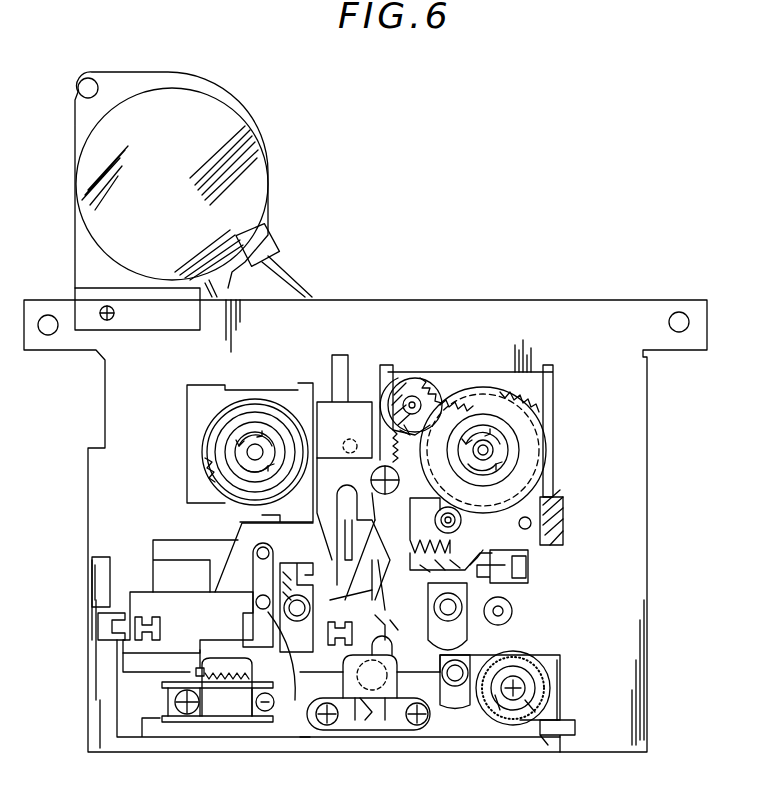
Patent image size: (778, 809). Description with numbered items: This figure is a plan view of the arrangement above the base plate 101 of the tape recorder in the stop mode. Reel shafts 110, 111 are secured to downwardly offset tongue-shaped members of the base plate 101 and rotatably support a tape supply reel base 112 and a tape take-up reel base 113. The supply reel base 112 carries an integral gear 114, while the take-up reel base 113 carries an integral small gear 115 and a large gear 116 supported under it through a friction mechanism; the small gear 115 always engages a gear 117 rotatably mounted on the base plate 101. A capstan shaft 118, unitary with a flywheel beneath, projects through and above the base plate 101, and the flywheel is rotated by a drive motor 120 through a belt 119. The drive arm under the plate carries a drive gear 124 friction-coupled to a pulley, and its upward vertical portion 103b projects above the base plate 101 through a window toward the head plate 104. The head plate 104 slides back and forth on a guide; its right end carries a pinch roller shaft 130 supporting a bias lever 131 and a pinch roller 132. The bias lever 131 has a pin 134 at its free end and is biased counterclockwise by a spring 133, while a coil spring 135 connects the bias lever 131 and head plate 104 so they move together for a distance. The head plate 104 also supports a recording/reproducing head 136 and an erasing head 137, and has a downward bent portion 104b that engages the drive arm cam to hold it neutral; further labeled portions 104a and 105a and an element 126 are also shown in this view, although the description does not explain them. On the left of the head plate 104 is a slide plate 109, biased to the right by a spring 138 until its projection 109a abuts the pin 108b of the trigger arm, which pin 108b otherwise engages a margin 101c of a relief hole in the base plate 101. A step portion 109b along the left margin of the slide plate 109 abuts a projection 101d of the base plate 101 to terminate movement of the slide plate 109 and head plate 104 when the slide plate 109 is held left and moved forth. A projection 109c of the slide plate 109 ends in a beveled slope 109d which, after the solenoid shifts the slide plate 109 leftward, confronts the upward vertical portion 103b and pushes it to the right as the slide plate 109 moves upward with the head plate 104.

The base plate 101 is at (647, 398).
The margin of relief hole 101c is at (300, 737).
The projection 101d is at (100, 627).
The upward vertical portion 103b is at (378, 575).
The head plate 104 is at (565, 668).
The drive assembly bracket 104a is at (560, 547).
The downward bent portion 104b is at (292, 568).
The bracket member 105a is at (515, 560).
The pin 108b is at (253, 602).
The slide plate 109 is at (132, 588).
The projection of slide plate 109a is at (248, 598).
The step portion 109b is at (120, 655).
The projection 109c is at (386, 622).
The slope 109d is at (385, 600).
The reel shaft 110 is at (247, 435).
The reel shaft 111 is at (500, 445).
The tape supply reel base 112 is at (240, 452).
The tape take-up reel base 113 is at (495, 449).
The gear 114 is at (205, 470).
The small gear 115 is at (470, 388).
The large gear 116 is at (546, 440).
The gear 117 is at (422, 378).
The capstan shaft 118 is at (512, 612).
The belt 119 is at (304, 270).
The drive motor 120 is at (130, 108).
The drive gear 124 is at (408, 385).
The small pinion 126 is at (470, 512).
The pinch roller shaft 130 is at (545, 680).
The bias lever 131 is at (478, 720).
The pinch roller 132 is at (525, 690).
The spring 133 is at (367, 697).
The pin 134 is at (380, 682).
The coil spring 135 is at (540, 740).
The recording/reproducing head 136 is at (343, 712).
The erasing head 137 is at (295, 700).
The spring 138 is at (218, 684).